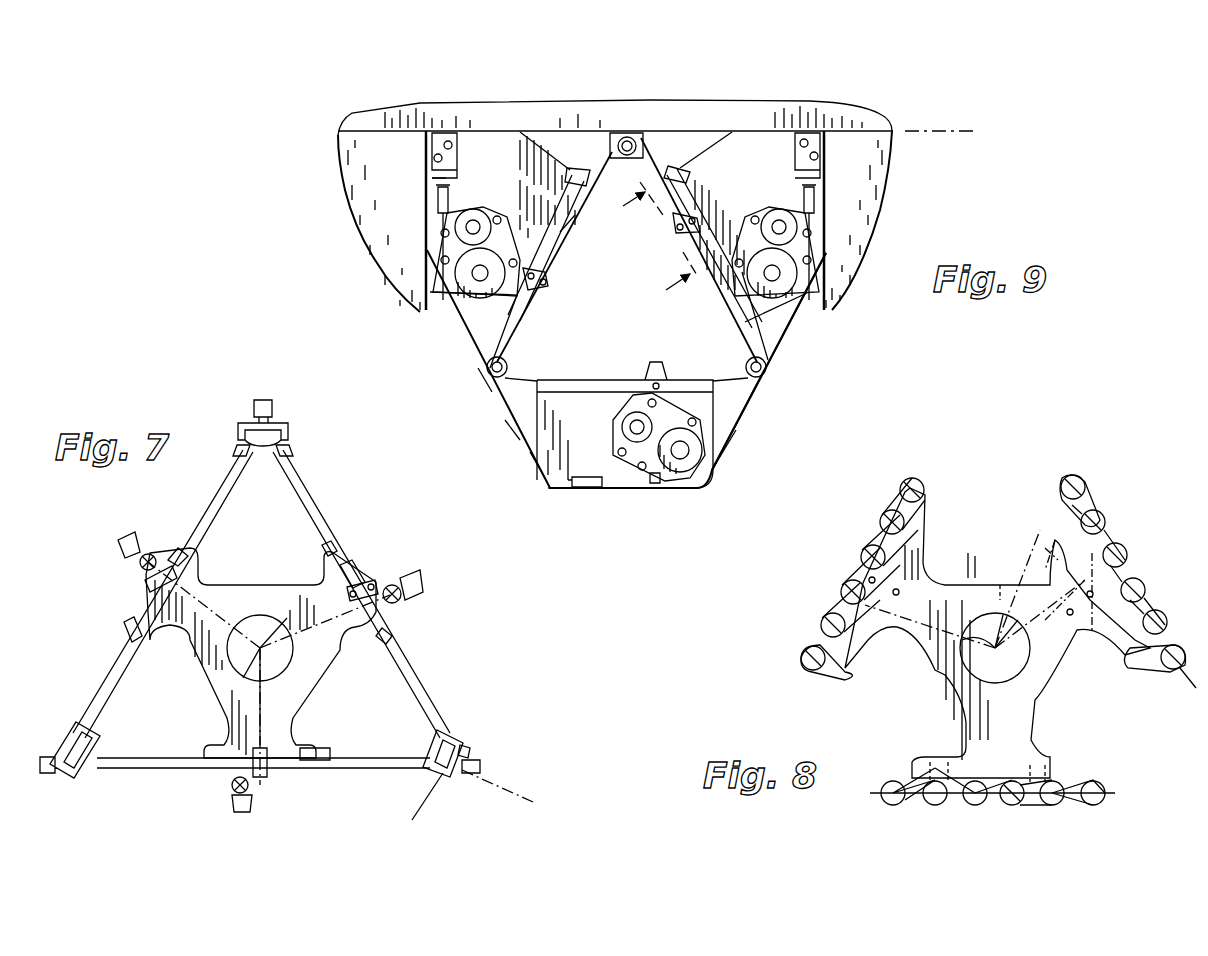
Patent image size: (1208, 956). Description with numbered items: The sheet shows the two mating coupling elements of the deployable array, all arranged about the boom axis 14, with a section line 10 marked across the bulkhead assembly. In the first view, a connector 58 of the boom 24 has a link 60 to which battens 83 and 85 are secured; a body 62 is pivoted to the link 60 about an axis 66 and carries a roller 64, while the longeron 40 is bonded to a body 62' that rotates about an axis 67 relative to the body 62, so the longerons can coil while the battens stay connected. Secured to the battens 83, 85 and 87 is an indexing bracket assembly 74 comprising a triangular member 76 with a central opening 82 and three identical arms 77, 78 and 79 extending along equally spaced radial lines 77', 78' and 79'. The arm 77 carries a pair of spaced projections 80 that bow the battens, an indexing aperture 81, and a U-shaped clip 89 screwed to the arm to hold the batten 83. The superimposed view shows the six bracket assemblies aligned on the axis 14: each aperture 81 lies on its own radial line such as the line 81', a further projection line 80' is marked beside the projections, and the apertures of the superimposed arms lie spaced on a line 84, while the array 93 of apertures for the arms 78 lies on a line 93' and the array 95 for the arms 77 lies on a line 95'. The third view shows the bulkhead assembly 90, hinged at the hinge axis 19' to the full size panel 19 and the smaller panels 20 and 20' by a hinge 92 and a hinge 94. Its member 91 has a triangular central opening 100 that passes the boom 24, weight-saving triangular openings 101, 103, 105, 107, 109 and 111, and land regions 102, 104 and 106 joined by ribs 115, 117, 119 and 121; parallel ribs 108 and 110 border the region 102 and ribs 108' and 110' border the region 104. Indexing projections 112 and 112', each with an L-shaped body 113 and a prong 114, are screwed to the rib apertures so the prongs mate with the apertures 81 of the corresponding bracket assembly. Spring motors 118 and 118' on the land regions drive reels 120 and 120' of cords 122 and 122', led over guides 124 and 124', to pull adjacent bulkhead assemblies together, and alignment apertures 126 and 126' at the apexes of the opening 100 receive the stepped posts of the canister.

In FIG. 9, the section line 10- 10 is at (645, 247).
In FIG. 9, the axis 14 is at (624, 300).
In FIG. 7, the axis 14 is at (269, 673).
In FIG. 8, the axis 14 is at (968, 628).
In FIG. 9, the full size panel 19 is at (623, 111).
In FIG. 9, the hinge axis 19' is at (940, 151).
In FIG. 9, the smaller panel 20 is at (358, 223).
In FIG. 9, the smaller panel 20' is at (873, 220).
In FIG. 7, the boom 24 is at (448, 684).
In FIG. 7, the longeron 40 is at (439, 780).
In FIG. 7, the connector 58 is at (460, 730).
In FIG. 7, the link 60 is at (430, 775).
In FIG. 7, the body 62 is at (481, 743).
In FIG. 7, the body 62' is at (500, 762).
In FIG. 7, the roller 64 is at (470, 776).
In FIG. 7, the axis 66 is at (410, 818).
In FIG. 7, the axis 67 is at (530, 802).
In FIG. 7, the indexing bracket assembly 74 is at (256, 566).
In FIG. 8, the indexing bracket assembly 74 is at (930, 692).
In FIG. 7, the triangular member 76 is at (197, 646).
In FIG. 8, the triangular member 76 is at (941, 586).
In FIG. 7, the arm 77 is at (371, 550).
In FIG. 8, the arm 77 is at (892, 645).
In FIG. 7, the radial line 77' is at (285, 577).
In FIG. 7, the arm 78 is at (201, 782).
In FIG. 8, the arm 78 is at (930, 722).
In FIG. 7, the radial line 78' is at (315, 708).
In FIG. 7, the arm 79 is at (116, 617).
In FIG. 8, the arm 79 is at (1088, 649).
In FIG. 7, the radial line 79' is at (232, 575).
In FIG. 7, the spaced projections 80 is at (365, 594).
In FIG. 8, the spaced projections 80 is at (1064, 580).
In FIG. 8, the pivot pin axis 80' is at (990, 574).
In FIG. 7, the indexing aperture 81 is at (290, 653).
In FIG. 8, the indexing aperture 81 is at (982, 641).
In FIG. 8, the radial line 81' is at (1061, 611).
In FIG. 7, the central opening 82 is at (294, 660).
In FIG. 8, the central opening 82 is at (992, 684).
In FIG. 7, the batten 83 is at (292, 480).
In FIG. 8, the line 84 is at (1060, 480).
In FIG. 7, the batten 85 is at (378, 757).
In FIG. 7, the batten 87 is at (100, 682).
In FIG. 7, the U-shaped clip 89 is at (172, 552).
In FIG. 9, the bulkhead assembly 90 is at (770, 398).
In FIG. 9, the member 91 is at (812, 322).
In FIG. 9, the hinge 92 is at (822, 150).
In FIG. 8, the array of apertures 93 is at (992, 776).
In FIG. 8, the line 93' is at (1127, 775).
In FIG. 9, the hinge 94 is at (453, 148).
In FIG. 8, the array of apertures 95 is at (949, 510).
In FIG. 8, the line 95' is at (948, 470).
In FIG. 9, the triangular central opening 100 is at (562, 222).
In FIG. 9, the triangular opening 101 is at (731, 418).
In FIG. 9, the land region 102 is at (760, 128).
In FIG. 9, the triangular opening 103 is at (531, 452).
In FIG. 9, the land region 104 is at (556, 490).
In FIG. 9, the triangular opening 105 is at (778, 347).
In FIG. 9, the land region 106 is at (436, 170).
In FIG. 9, the triangular opening 107 is at (480, 354).
In FIG. 9, the rib 108 is at (713, 247).
In FIG. 9, the rib 108' is at (700, 357).
In FIG. 9, the triangular opening 109 is at (545, 128).
In FIG. 9, the rib 110 is at (699, 247).
In FIG. 9, the rib 110' is at (624, 434).
In FIG. 9, the triangular opening 111 is at (662, 128).
In FIG. 9, the indexing projection 112 is at (659, 240).
In FIG. 9, the indexing projection 112' is at (640, 362).
In FIG. 7, the L-shaped body 113 is at (124, 545).
In FIG. 7, the prong 114 is at (143, 582).
In FIG. 9, the rib 115 is at (600, 128).
In FIG. 9, the rib 117 is at (708, 128).
In FIG. 9, the contact force spring motor 118 is at (831, 218).
In FIG. 9, the contact force spring motor 118' is at (757, 481).
In FIG. 9, the rib 119 is at (506, 420).
In FIG. 9, the reel 120 is at (820, 259).
In FIG. 9, the reel 120' is at (686, 462).
In FIG. 9, the rib 121 is at (478, 370).
In FIG. 9, the cord 122 is at (826, 251).
In FIG. 9, the cord 122' is at (659, 460).
In FIG. 9, the guide 124 is at (777, 233).
In FIG. 9, the guide 124' is at (600, 502).
In FIG. 9, the alignment aperture 126 is at (618, 162).
In FIG. 9, the alignment aperture 126' is at (774, 375).